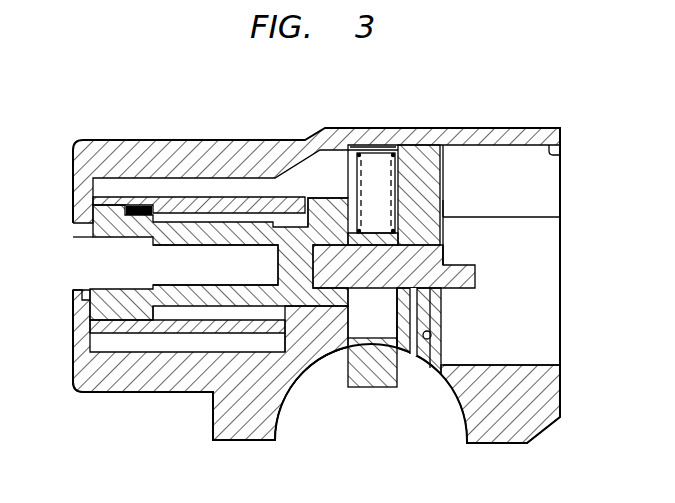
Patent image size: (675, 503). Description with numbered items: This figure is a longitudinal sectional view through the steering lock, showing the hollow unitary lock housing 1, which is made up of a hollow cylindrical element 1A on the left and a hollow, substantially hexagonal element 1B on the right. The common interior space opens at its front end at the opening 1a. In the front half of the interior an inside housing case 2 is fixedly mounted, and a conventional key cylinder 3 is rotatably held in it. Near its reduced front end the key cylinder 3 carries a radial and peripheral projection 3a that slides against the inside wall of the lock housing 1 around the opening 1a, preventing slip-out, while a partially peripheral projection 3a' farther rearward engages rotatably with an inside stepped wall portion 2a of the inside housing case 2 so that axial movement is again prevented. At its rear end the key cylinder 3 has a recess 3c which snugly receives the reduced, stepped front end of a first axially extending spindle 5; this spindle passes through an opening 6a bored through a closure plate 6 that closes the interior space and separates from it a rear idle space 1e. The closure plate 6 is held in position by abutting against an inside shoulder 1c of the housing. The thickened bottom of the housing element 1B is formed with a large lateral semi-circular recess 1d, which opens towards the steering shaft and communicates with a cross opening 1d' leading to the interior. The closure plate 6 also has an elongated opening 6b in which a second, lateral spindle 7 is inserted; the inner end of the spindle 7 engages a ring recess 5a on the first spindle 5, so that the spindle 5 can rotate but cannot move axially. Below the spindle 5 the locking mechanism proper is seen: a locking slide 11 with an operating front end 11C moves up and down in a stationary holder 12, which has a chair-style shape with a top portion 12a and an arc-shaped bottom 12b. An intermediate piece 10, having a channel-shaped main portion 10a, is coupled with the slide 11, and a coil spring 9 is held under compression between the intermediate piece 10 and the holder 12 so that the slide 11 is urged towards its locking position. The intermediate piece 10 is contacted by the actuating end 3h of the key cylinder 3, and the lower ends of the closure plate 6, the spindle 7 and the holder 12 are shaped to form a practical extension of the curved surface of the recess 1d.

The lock housing 1 is at (225, 140).
The hollow cylindrical element 1A is at (112, 140).
The hollow substantially hexagonal element 1B is at (503, 128).
The front opening 1a is at (73, 272).
The inside shoulder 1c is at (458, 145).
The semi-circular recess 1d is at (210, 383).
The cross opening 1d' is at (311, 401).
The rear idle space 1e is at (558, 152).
The inside housing case 2 is at (170, 197).
The inside stepped wall portion 2a is at (142, 318).
The key cylinder 3 is at (240, 300).
The radial and peripheral projection 3a is at (54, 307).
The partially peripheral projection 3a' is at (171, 371).
The recess 3c is at (313, 265).
The actuating end 3h is at (320, 205).
The first axially extending spindle 5 is at (475, 277).
The ring recess 5a is at (443, 238).
The closure plate 6 is at (441, 318).
The central bore opening 6a is at (443, 201).
The elongated opening 6b is at (431, 333).
The second lateral spindle 7 is at (425, 367).
The coil spring 9 is at (405, 165).
The intermediate piece 10 is at (358, 165).
The channel-shaped main portion 10a is at (356, 232).
The locking slide 11 is at (373, 390).
The operating front end 11C is at (382, 390).
The stationary holder 12 is at (403, 355).
The top portion 12a is at (372, 145).
The arc-shaped bottom 12b is at (318, 362).